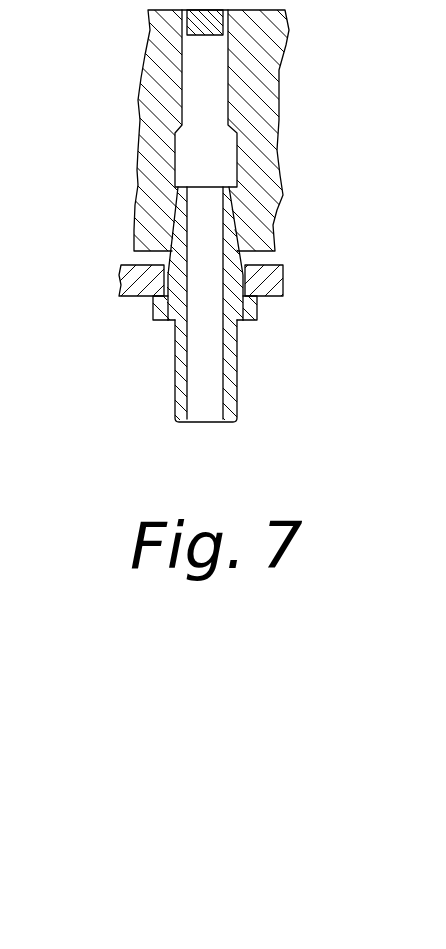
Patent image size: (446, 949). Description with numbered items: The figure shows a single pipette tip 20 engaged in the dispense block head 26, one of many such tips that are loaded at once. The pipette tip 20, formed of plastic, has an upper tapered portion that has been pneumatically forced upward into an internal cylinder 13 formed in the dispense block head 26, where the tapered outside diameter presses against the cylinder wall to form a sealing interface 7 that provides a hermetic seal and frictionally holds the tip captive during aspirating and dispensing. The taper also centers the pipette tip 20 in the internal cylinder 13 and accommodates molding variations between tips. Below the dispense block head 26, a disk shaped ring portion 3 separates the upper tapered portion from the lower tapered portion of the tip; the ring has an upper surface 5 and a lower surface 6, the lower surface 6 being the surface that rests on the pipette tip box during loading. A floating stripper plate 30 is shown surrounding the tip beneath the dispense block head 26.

The dispense block head 26 is at (136, 78).
The internal cylinder 13 is at (203, 165).
The sealing interface 7 is at (170, 209).
The pipette tip 20 is at (152, 382).
The lower surface 6 is at (240, 320).
The disk shaped ring portion 3 is at (153, 312).
The floating stripper plate 30 is at (120, 293).
The upper surface 5 is at (253, 292).